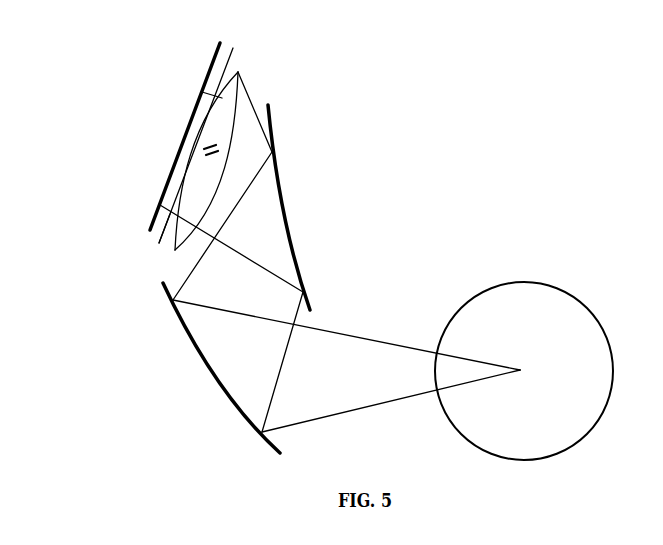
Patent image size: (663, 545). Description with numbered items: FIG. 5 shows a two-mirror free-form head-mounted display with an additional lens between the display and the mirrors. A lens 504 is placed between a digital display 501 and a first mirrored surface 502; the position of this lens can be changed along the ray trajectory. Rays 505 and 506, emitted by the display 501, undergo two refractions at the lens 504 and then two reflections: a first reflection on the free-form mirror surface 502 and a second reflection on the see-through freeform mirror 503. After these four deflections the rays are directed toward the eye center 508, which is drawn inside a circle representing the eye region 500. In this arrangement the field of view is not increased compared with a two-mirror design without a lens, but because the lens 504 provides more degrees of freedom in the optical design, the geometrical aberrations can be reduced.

The light source / lamp 500 is at (555, 285).
The digital display 501 is at (185, 132).
The first mirrored surface 502 is at (280, 185).
The see-through freeform mirror 503 is at (187, 337).
The lens 504 is at (237, 97).
The ray 505 is at (212, 137).
The ray 506 is at (148, 241).
The eye center 508 is at (530, 353).